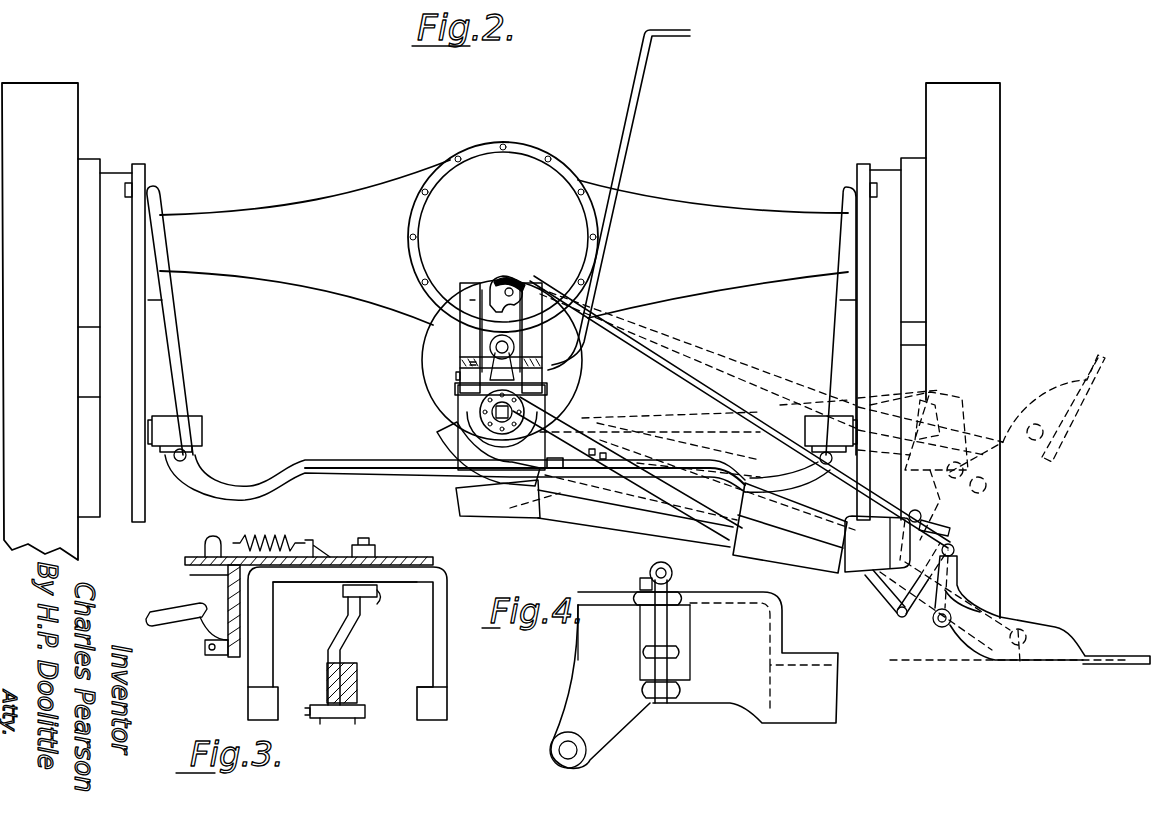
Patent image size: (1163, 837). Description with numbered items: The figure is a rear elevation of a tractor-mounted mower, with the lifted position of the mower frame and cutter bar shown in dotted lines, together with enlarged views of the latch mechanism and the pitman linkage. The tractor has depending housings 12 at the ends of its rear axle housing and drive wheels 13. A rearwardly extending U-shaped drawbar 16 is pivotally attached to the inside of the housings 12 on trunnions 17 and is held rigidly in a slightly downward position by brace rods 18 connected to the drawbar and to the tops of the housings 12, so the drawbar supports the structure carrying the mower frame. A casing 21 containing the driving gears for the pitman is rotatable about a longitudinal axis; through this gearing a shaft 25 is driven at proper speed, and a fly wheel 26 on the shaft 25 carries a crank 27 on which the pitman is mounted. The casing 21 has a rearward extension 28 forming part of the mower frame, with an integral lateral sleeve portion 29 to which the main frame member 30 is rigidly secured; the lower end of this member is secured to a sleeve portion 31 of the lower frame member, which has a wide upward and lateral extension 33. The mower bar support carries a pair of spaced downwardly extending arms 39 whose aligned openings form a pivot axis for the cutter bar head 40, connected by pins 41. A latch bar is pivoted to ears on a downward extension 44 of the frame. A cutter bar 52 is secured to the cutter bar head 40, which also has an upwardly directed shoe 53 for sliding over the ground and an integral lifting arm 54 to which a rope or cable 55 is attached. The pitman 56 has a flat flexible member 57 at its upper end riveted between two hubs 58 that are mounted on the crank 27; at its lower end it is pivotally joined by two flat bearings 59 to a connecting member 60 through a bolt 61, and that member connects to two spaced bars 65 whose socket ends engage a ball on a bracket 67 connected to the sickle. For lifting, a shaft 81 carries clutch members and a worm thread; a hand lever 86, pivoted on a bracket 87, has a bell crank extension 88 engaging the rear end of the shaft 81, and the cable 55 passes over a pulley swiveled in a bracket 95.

In FIG. 2, the depending housings 12 is at (146, 311).
In FIG. 2, the drive wheels 13 is at (80, 107).
In FIG. 2, the U-shaped drawbar 16 is at (230, 486).
In FIG. 2, the trunnions 17 is at (200, 413).
In FIG. 2, the brace rods 18 is at (176, 338).
In FIG. 2, the casing 21 is at (762, 188).
In FIG. 2, the shaft 25 is at (428, 370).
In FIG. 2, the fly wheel 26 is at (470, 415).
In FIG. 2, the crank 27 is at (450, 437).
In FIG. 2, the rearward extension 28 is at (455, 470).
In FIG. 2, the sleeve portion 29 is at (470, 505).
In FIG. 2, the main frame member 30 is at (570, 512).
In FIG. 2, the sleeve portion 31 is at (748, 555).
In FIG. 3, the upward and lateral extension 33 is at (393, 557).
In FIG. 2, the arms 39 is at (889, 545).
In FIG. 2, the cutter bar head 40 is at (1055, 626).
In FIG. 2, the pins 41 is at (942, 628).
In FIG. 2, the downward extension 44 is at (855, 524).
In FIG. 2, the cutter bar 52 is at (1138, 650).
In FIG. 2, the shoe 53 is at (990, 522).
In FIG. 2, the lifting arm 54 is at (958, 583).
In FIG. 2, the rope or cable 55 is at (640, 355).
In FIG. 2, the pitman 56 is at (657, 483).
In FIG. 2, the flat flexible member 57 is at (555, 426).
In FIG. 2, the hubs 58 is at (505, 420).
In FIG. 2, the flat bearings 59 is at (880, 596).
In FIG. 2, the connecting member 60 is at (902, 648).
In FIG. 2, the bolt 61 is at (900, 618).
In FIG. 2, the spaced bars 65 is at (1010, 618).
In FIG. 2, the bracket 67 is at (1010, 665).
In FIG. 2, the shaft 81 is at (495, 344).
In FIG. 2, the hand lever 86 is at (632, 110).
In FIG. 2, the bracket 87 is at (470, 360).
In FIG. 2, the bell crank extension 88 is at (512, 353).
In FIG. 2, the bracket 95 is at (495, 292).